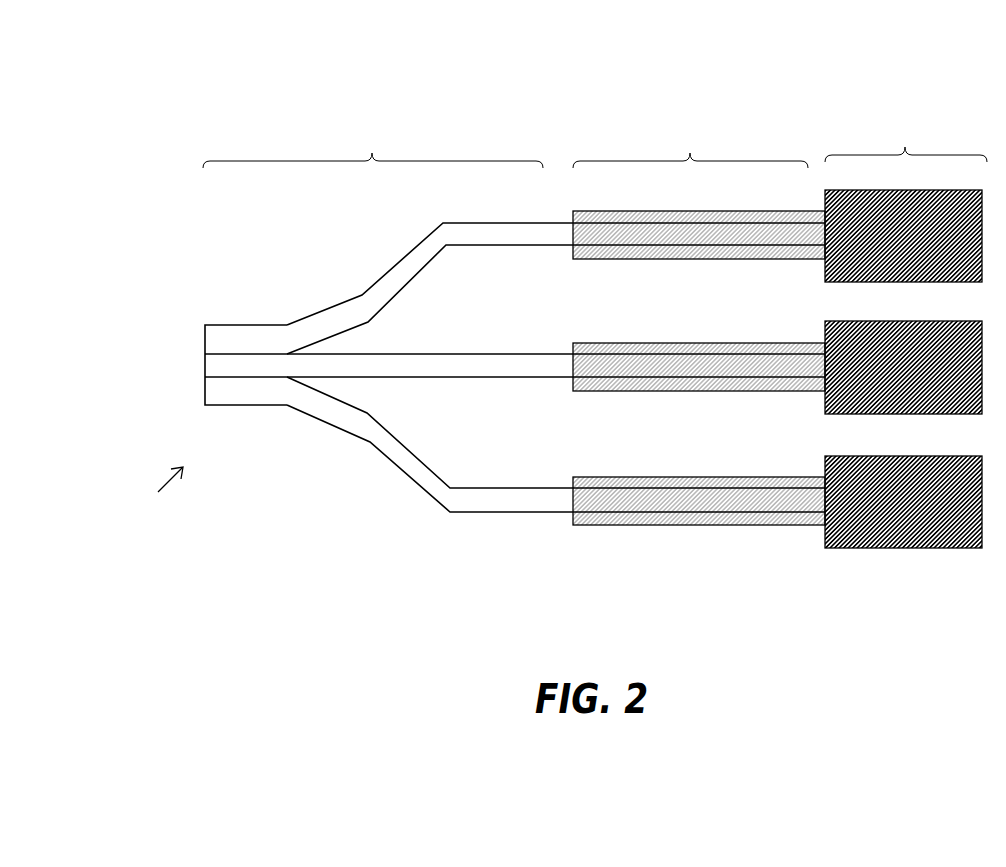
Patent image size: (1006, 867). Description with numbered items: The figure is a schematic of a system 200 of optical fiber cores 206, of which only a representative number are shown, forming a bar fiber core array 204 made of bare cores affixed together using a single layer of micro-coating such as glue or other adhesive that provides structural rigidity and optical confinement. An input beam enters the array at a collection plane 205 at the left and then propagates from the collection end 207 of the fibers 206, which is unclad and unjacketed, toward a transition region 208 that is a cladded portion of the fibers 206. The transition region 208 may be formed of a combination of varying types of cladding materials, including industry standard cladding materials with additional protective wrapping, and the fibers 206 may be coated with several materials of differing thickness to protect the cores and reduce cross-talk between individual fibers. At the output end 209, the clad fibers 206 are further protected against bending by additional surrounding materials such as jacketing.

The system 200 is at (581, 48).
The bar fiber core array 204 is at (151, 491).
The collection plane 205 is at (203, 345).
The optical fiber cores 206 is at (364, 270).
The collection end 207 is at (373, 133).
The transition region 208 is at (699, 314).
The output end 209 is at (906, 324).